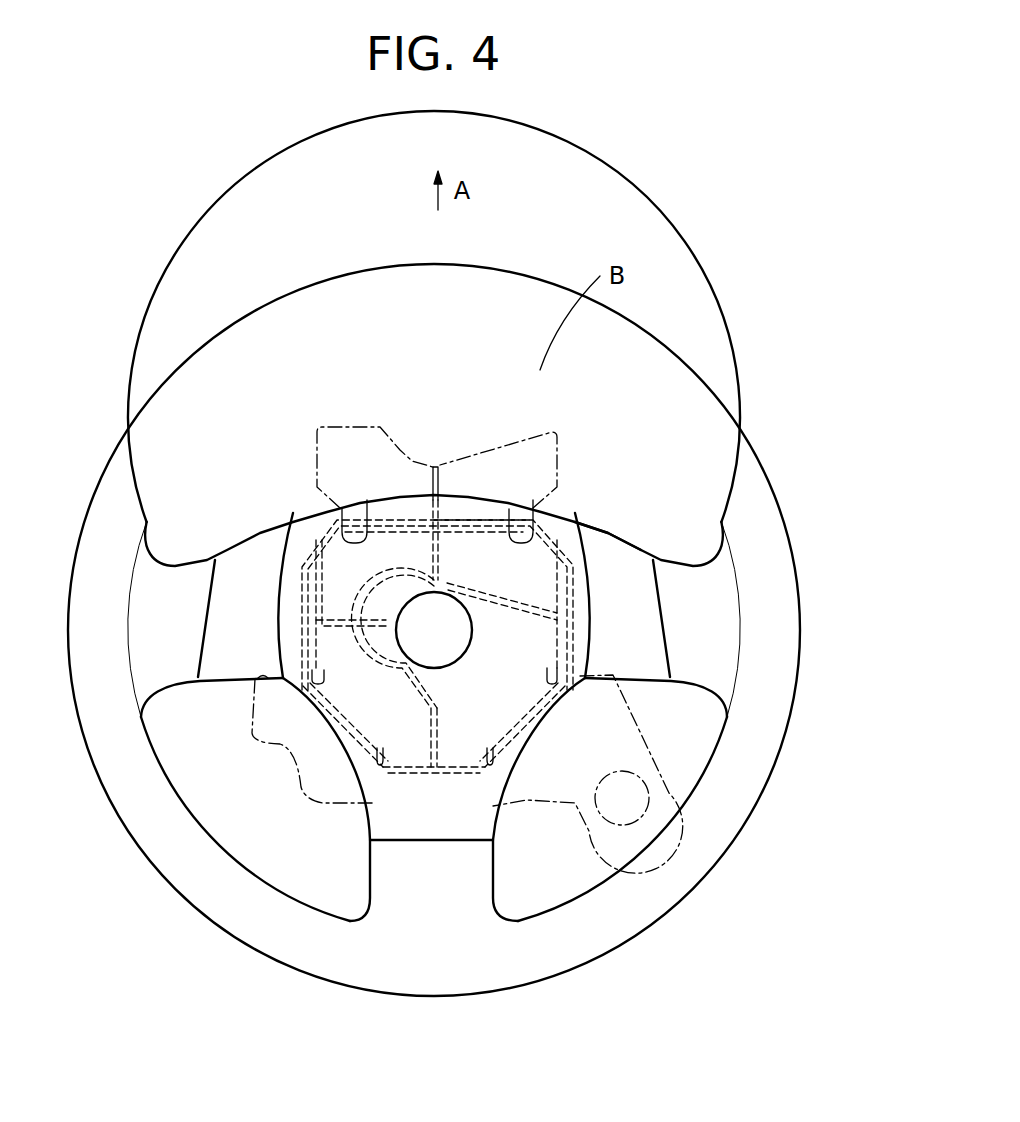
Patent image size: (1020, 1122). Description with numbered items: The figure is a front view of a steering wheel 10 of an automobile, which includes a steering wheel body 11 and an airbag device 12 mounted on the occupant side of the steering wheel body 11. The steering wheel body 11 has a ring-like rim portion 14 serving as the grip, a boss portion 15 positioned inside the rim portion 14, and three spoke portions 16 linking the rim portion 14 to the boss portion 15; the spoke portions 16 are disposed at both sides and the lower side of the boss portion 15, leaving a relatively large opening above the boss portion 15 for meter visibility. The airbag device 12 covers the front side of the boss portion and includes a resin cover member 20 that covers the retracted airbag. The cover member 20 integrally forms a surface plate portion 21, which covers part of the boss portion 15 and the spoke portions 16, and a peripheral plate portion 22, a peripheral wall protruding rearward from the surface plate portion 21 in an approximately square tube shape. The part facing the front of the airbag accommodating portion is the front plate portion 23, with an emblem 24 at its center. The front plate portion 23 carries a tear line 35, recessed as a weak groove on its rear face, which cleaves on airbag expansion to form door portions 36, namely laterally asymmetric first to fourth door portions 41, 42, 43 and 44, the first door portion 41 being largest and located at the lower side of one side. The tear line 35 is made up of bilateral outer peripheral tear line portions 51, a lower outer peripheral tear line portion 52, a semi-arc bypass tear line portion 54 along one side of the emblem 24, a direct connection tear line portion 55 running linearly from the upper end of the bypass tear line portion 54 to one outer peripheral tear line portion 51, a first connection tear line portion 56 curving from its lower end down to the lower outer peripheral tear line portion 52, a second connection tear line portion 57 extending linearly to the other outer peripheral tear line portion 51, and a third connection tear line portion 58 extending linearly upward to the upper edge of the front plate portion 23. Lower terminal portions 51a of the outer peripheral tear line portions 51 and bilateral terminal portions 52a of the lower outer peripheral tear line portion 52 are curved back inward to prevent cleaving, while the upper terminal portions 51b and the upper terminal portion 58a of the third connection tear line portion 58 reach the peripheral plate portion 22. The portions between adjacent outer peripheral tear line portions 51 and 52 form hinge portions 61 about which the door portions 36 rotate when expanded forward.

The steering wheel 10 is at (428, 553).
The steering wheel body 11 is at (145, 405).
The airbag device 12 is at (572, 522).
The rim portion 14 is at (520, 273).
The boss portion 15 is at (300, 527).
The spoke portions 16 is at (207, 562).
The cover member 20 is at (327, 527).
The surface plate portion 21 is at (530, 573).
The peripheral plate portion 22 is at (590, 526).
The front plate portion 23 is at (467, 540).
The emblem 24 is at (407, 657).
The tear line 35 is at (560, 613).
The door portions 36 is at (567, 805).
The first door portion 41 is at (527, 806).
The second door portion 42 is at (318, 802).
The third door portion 43 is at (350, 428).
The fourth door portion 44 is at (548, 432).
The bilateral outer peripheral tear line portions 51 is at (306, 587).
The lower terminal portions 51a is at (283, 698).
The upper terminal portions 51b is at (365, 537).
The lower outer peripheral tear line portion 52 is at (447, 772).
The bilateral terminal portions 52a is at (382, 752).
The bypass tear line portion 54 is at (395, 602).
The direct connection tear line portion 55 is at (497, 606).
The first connection tear line portion 56 is at (441, 704).
The second connection tear line portion 57 is at (350, 629).
The third connection tear line portion 58 is at (432, 547).
The upper terminal portion 58a is at (428, 517).
The hinge portion 61 is at (390, 537).